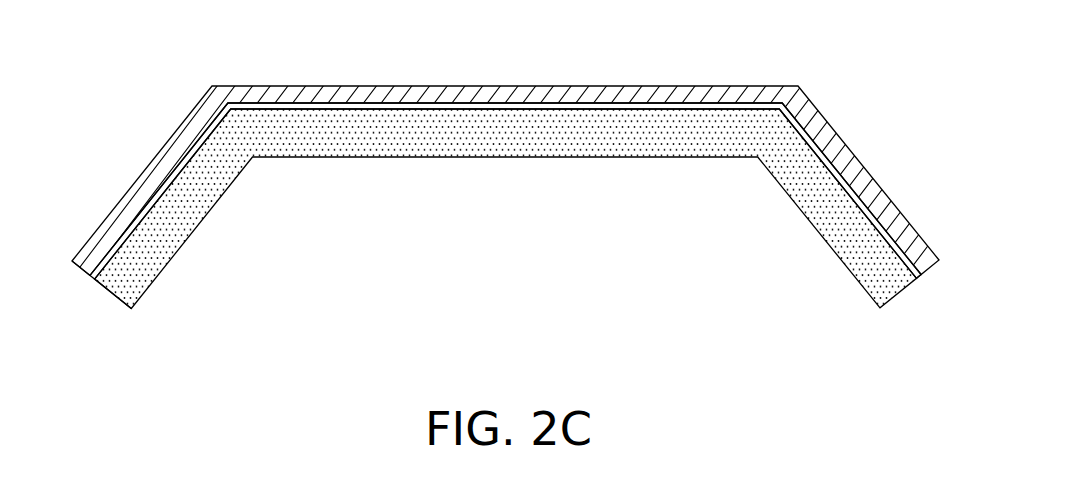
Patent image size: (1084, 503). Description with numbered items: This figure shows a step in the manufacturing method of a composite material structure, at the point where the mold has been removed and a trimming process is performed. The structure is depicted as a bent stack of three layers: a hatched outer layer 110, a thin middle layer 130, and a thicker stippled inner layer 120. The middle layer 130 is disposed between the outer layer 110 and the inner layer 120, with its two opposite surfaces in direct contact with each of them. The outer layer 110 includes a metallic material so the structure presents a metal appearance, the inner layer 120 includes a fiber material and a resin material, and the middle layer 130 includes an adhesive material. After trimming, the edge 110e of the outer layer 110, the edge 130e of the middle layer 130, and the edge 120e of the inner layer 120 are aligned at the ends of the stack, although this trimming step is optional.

The outer layer 110 is at (290, 92).
The middle layer 130 is at (345, 108).
The inner layer 120 is at (422, 120).
The edge of the outer layer 110e is at (79, 270).
The edge of the inner layer 120e is at (117, 298).
The edge of the middle layer 130e is at (918, 278).